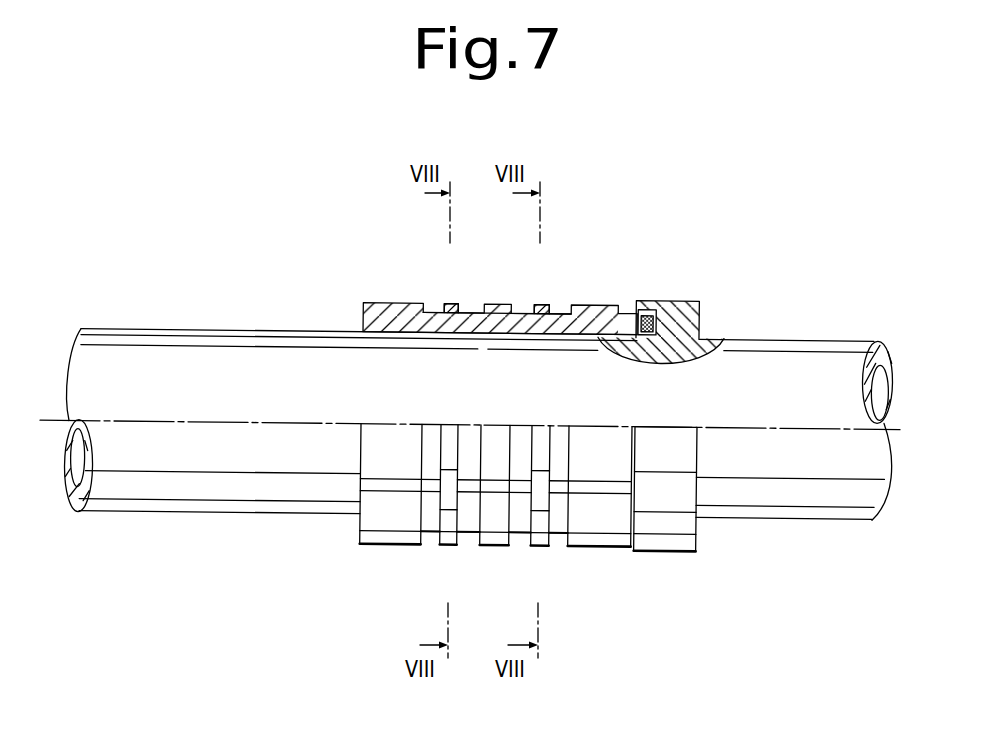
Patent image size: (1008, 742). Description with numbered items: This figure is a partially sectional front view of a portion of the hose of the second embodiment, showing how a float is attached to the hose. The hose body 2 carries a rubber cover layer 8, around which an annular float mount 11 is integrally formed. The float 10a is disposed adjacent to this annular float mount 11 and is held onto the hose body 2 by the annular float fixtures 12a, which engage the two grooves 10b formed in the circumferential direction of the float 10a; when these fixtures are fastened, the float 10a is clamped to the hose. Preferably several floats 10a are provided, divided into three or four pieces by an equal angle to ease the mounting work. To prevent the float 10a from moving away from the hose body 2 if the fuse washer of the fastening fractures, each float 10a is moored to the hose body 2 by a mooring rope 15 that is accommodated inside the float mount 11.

The hose body 2 is at (218, 330).
The rubber cover layer 8 is at (773, 365).
The float 10a is at (593, 303).
The grooves 10b is at (433, 533).
The annular float mount 11 is at (691, 301).
The annular float fixtures 12a is at (535, 300).
The mooring rope 15 is at (641, 306).